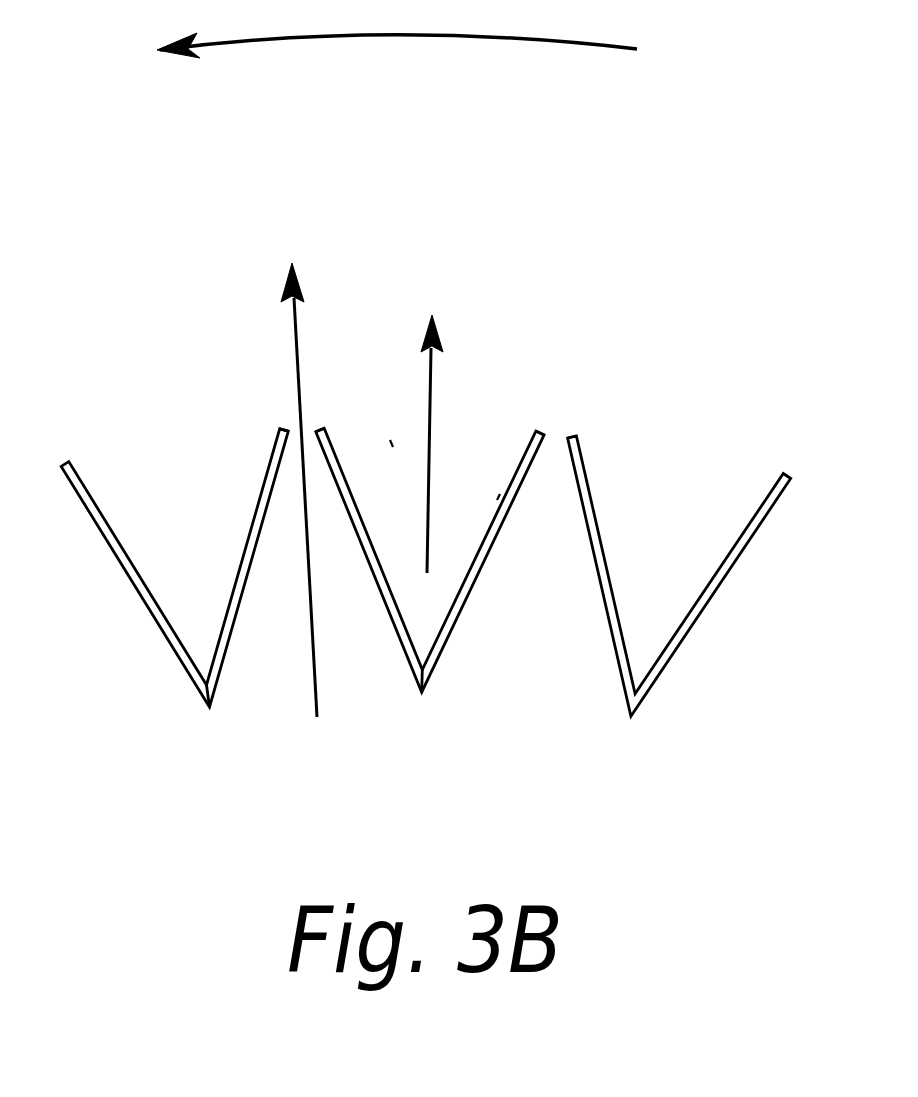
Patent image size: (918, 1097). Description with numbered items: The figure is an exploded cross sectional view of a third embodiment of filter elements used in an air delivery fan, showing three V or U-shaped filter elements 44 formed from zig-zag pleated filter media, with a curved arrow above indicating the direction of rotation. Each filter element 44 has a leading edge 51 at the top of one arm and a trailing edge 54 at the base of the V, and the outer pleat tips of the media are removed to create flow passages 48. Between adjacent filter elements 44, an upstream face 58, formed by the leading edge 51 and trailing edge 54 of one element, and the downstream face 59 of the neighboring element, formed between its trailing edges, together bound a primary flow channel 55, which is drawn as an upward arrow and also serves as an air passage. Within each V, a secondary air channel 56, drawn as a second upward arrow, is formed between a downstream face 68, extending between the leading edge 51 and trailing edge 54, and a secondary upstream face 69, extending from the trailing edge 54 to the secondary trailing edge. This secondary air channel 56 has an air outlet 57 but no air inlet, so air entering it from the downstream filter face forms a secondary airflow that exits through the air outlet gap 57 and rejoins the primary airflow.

The filter element 44 is at (590, 492).
The flow passage 48 is at (557, 440).
The leading edge 51 is at (283, 433).
The trailing edge 54 is at (209, 710).
The primary flow channel 55 is at (293, 342).
The secondary air channel 56 is at (433, 390).
The air outlet 57 is at (392, 447).
The upstream face 58 is at (230, 643).
The downstream face 59 is at (390, 622).
The downstream face 68 is at (330, 443).
The secondary upstream face 69 is at (497, 500).